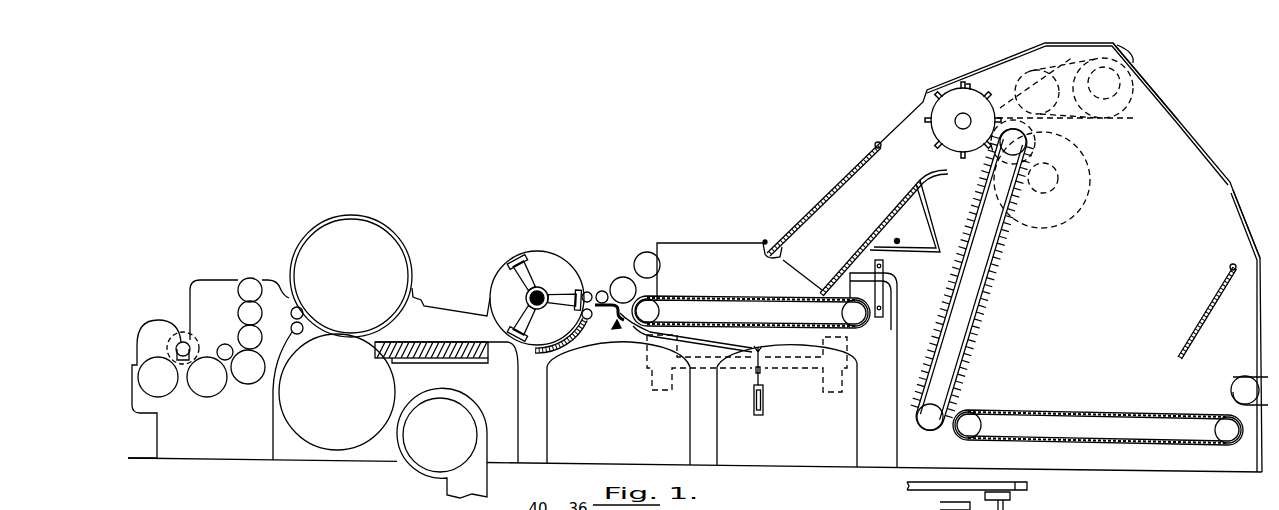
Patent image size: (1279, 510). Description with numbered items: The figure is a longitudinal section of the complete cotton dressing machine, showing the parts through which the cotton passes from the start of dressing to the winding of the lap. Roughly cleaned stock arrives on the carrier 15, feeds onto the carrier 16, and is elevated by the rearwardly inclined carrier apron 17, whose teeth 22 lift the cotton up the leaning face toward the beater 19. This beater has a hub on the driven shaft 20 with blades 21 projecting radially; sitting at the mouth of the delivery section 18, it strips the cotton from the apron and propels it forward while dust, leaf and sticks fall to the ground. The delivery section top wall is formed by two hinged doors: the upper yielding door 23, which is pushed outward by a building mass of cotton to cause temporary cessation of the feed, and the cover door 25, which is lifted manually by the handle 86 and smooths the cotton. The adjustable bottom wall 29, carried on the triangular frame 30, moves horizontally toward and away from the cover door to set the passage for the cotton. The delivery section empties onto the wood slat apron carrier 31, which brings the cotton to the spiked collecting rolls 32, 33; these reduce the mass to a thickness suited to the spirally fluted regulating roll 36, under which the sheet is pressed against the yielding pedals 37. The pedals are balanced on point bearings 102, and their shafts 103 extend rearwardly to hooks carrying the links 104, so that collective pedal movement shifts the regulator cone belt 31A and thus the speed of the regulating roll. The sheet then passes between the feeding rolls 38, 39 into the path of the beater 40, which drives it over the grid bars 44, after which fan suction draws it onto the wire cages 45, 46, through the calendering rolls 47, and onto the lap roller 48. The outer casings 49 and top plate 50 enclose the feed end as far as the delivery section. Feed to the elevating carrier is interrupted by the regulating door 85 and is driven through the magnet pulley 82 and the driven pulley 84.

The carrier 15 is at (1245, 377).
The carrier 16 is at (1052, 411).
The elevating carrier apron 17 is at (984, 297).
The delivery section 18 is at (825, 222).
The beater 19 is at (952, 100).
The driven shaft 20 is at (968, 113).
The blades 21 is at (975, 86).
The teeth 22 is at (996, 275).
The door 23 is at (900, 130).
The cover door 25 is at (850, 182).
The adjustable bottom wall 29 is at (888, 216).
The triangular frame 30 is at (934, 222).
The wood slat apron carrier 31 is at (711, 299).
The regulator cone belt 31A is at (786, 370).
The collecting roll 32 is at (647, 252).
The collecting roll 33 is at (623, 277).
The regulating roll 36 is at (602, 291).
The yielding pedals 37 is at (605, 310).
The feeding roll 38 is at (587, 292).
The feeding roll 39 is at (587, 319).
The beater 40 is at (538, 275).
The grid bars 44 is at (432, 343).
The wire cage 45 is at (396, 257).
The wire cage 46 is at (384, 390).
The calendering rolls 47 is at (240, 310).
The lap roller 48 is at (183, 342).
The outer casings 49 is at (1232, 212).
The top plate 50 is at (1186, 135).
The pulley 82 is at (1028, 487).
The driven pulley 84 is at (1020, 493).
The regulating door 85 is at (1203, 313).
The handle 86 is at (764, 242).
The point bearings 102 is at (617, 324).
The pedal shafts 103 is at (705, 341).
The links 104 is at (754, 375).